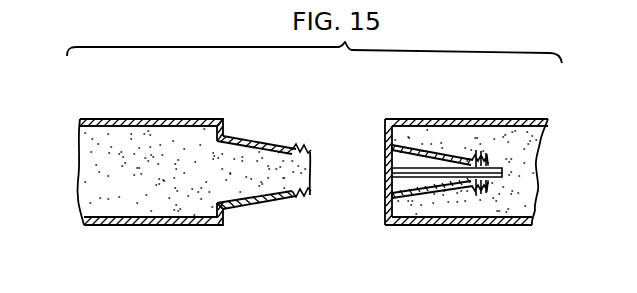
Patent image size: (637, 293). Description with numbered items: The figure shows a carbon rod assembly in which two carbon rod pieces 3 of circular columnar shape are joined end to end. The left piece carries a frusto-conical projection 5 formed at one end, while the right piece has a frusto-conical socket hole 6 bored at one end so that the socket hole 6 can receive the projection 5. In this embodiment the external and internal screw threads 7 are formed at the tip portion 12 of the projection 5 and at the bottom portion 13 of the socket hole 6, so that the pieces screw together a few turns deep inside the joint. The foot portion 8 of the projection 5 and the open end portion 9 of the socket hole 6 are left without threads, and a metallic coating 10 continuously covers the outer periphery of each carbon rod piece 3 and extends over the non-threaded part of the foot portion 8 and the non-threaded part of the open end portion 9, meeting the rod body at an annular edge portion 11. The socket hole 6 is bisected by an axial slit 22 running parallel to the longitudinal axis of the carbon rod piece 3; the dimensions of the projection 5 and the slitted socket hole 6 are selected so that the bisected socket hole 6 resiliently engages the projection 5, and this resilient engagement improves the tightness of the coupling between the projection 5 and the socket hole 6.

The carbon rod 3 is at (138, 133).
The projection 5 is at (245, 137).
The socket hole 6 is at (412, 160).
The screw threads 7 is at (295, 147).
The foot portion 8 is at (229, 214).
The open end portion 9 is at (385, 196).
The metallic coating 10 is at (150, 225).
The annular edge portion 11 is at (227, 127).
The tip portion 12 is at (318, 184).
The bottom portion 13 is at (502, 178).
The slit 22 is at (500, 150).